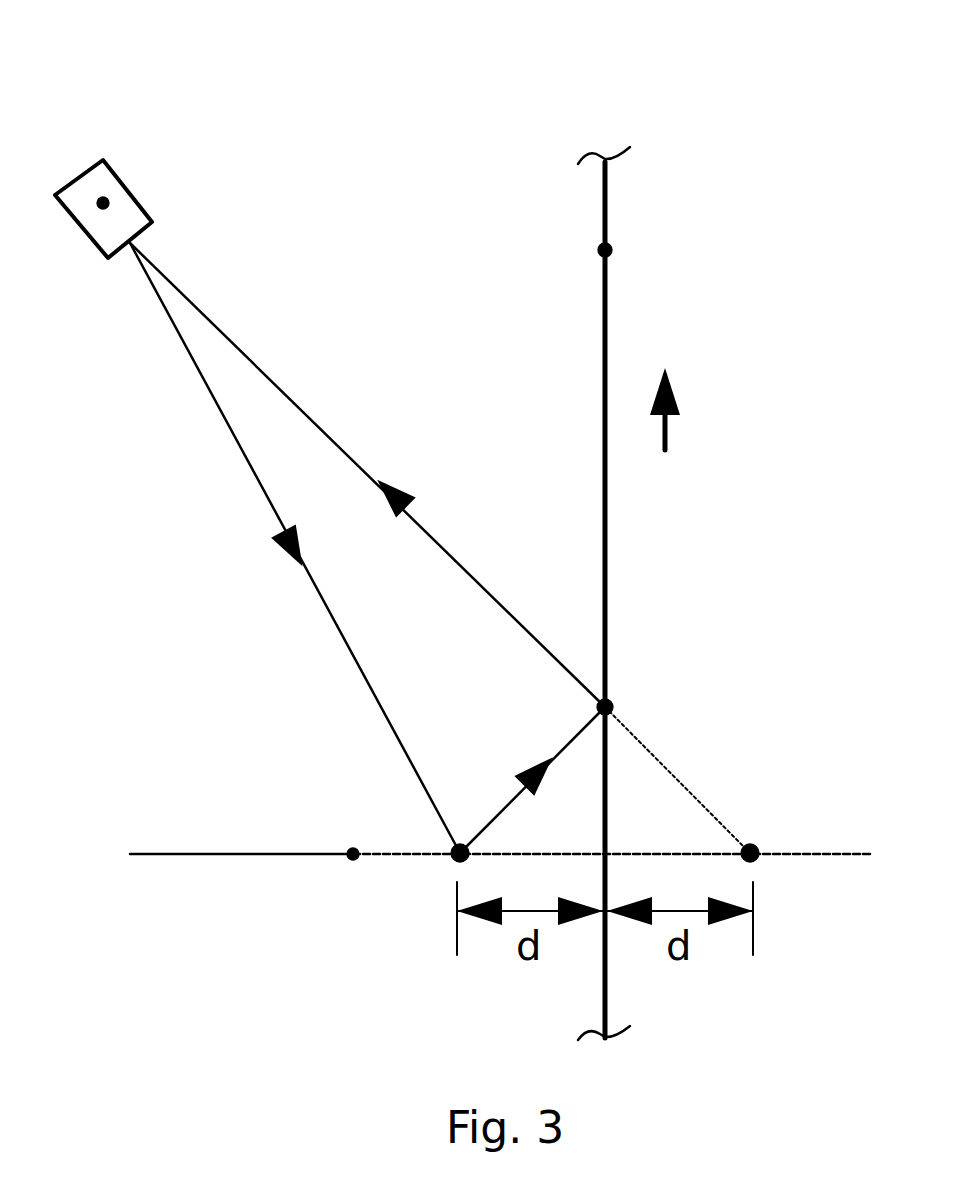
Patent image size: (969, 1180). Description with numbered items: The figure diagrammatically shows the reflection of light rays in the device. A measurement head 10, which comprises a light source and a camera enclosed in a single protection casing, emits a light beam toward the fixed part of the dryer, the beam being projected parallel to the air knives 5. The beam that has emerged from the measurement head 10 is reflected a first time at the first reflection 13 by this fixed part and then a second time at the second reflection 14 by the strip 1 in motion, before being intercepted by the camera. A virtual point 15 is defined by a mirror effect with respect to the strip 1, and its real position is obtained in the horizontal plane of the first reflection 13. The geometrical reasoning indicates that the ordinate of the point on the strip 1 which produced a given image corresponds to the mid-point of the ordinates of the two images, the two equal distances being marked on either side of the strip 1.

The strip 1 is at (605, 250).
The measurement head 10 is at (103, 203).
The air knives 5 is at (479, 856).
The first reflection 13 is at (455, 857).
The second reflection 14 is at (605, 707).
The virtual point 15 is at (750, 853).